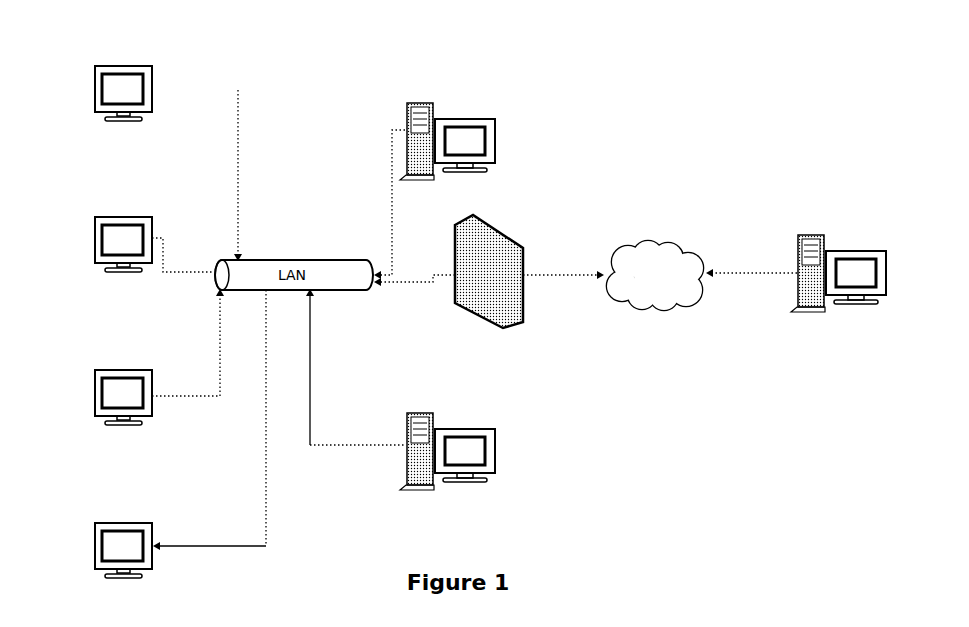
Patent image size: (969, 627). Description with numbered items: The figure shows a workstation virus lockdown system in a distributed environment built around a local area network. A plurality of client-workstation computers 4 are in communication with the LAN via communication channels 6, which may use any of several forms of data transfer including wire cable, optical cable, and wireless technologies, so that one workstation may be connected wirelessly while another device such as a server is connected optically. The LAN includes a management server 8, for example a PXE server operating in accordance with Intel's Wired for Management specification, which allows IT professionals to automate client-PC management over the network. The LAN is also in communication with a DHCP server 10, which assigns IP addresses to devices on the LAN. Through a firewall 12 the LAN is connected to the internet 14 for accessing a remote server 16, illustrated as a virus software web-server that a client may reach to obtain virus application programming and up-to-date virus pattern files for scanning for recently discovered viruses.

The client-workstation computers 4 is at (122, 63).
The communication channels 6 is at (240, 122).
The management server 8 is at (458, 118).
The DHCP server 10 is at (443, 512).
The firewall 12 is at (527, 218).
The internet 14 is at (678, 243).
The remote server 16 is at (828, 352).